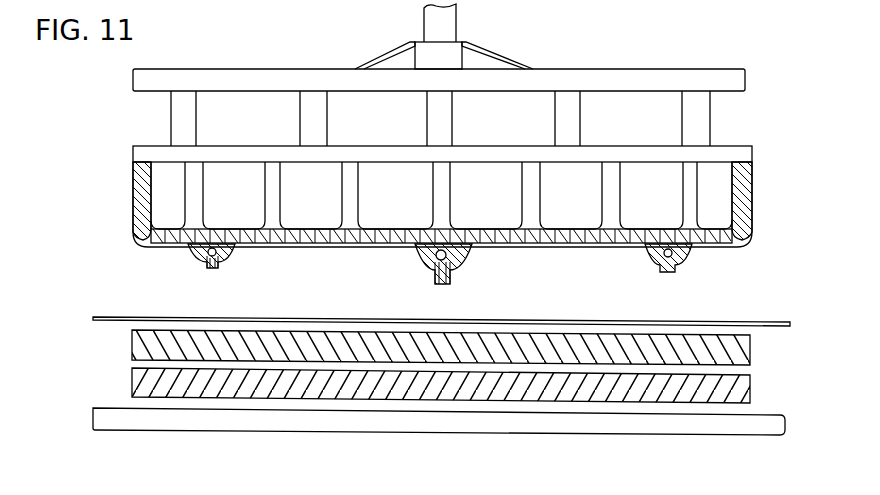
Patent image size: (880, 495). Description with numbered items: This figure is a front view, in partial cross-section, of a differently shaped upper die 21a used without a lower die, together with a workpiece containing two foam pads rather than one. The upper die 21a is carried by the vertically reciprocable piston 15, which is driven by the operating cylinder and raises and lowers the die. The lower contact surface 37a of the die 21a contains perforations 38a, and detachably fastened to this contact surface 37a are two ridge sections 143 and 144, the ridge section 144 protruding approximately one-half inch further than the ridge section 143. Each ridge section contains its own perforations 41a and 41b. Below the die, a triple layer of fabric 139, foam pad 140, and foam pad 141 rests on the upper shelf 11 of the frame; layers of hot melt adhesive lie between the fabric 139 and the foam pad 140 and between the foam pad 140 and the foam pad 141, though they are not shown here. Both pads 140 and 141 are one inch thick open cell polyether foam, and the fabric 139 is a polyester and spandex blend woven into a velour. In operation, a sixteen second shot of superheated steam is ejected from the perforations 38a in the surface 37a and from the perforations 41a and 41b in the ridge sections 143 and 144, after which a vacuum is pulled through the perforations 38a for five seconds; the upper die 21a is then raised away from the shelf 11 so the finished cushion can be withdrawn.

The piston 15 is at (458, 23).
The upper die 21a is at (476, 219).
The perforations 38a is at (330, 228).
The contact surface 37a is at (582, 248).
The ridge section 143 is at (231, 249).
The perforations 41a is at (213, 270).
The ridge section 144 is at (464, 256).
The perforations 41b is at (440, 287).
The fabric 139 is at (784, 322).
The foam pad 140 is at (752, 352).
The foam pad 141 is at (752, 387).
The upper shelf 11 is at (93, 408).